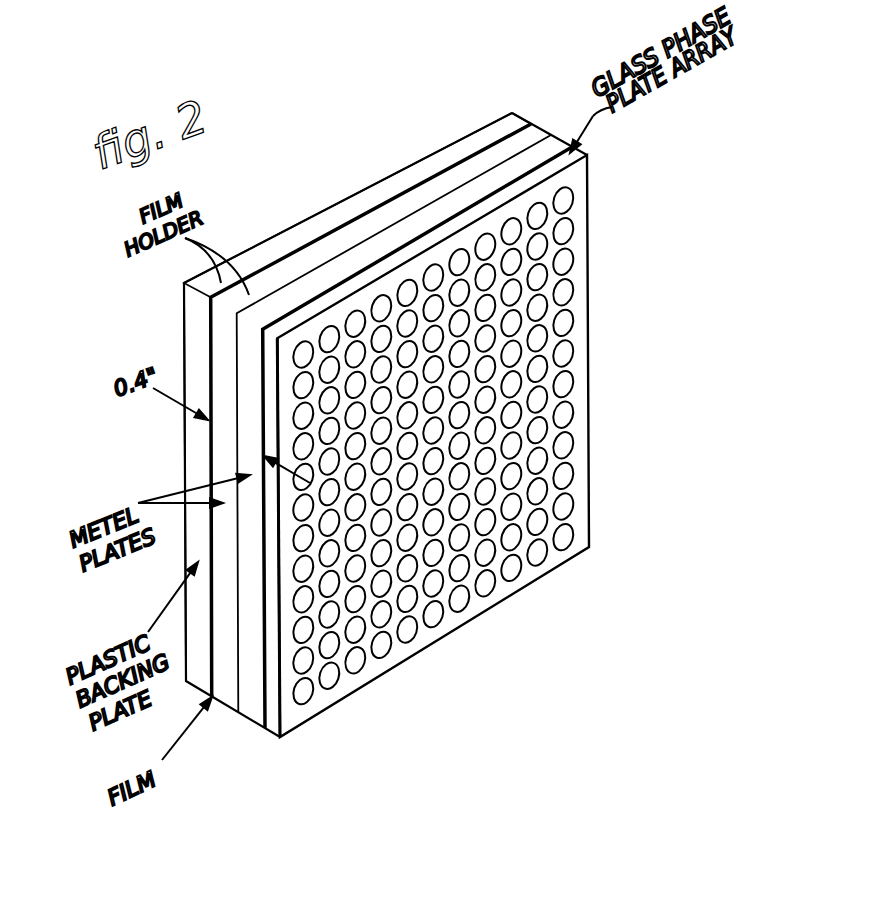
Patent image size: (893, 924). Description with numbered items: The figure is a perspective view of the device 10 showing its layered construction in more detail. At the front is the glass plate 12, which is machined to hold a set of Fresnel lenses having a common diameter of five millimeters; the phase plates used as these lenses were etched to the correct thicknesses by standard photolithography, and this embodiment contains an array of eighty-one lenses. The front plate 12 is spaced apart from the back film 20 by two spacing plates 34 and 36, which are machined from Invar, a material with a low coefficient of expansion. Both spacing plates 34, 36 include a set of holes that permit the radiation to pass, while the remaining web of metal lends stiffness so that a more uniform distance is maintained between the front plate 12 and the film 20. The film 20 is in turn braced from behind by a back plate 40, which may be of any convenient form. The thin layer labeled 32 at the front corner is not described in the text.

The device 10 is at (157, 317).
The glass plate 12 is at (590, 521).
The film 20 is at (452, 162).
The glass phase plate array 32 is at (582, 156).
The spacing plate 34 is at (549, 142).
The spacing plate 36 is at (500, 150).
The back plate 40 is at (387, 187).